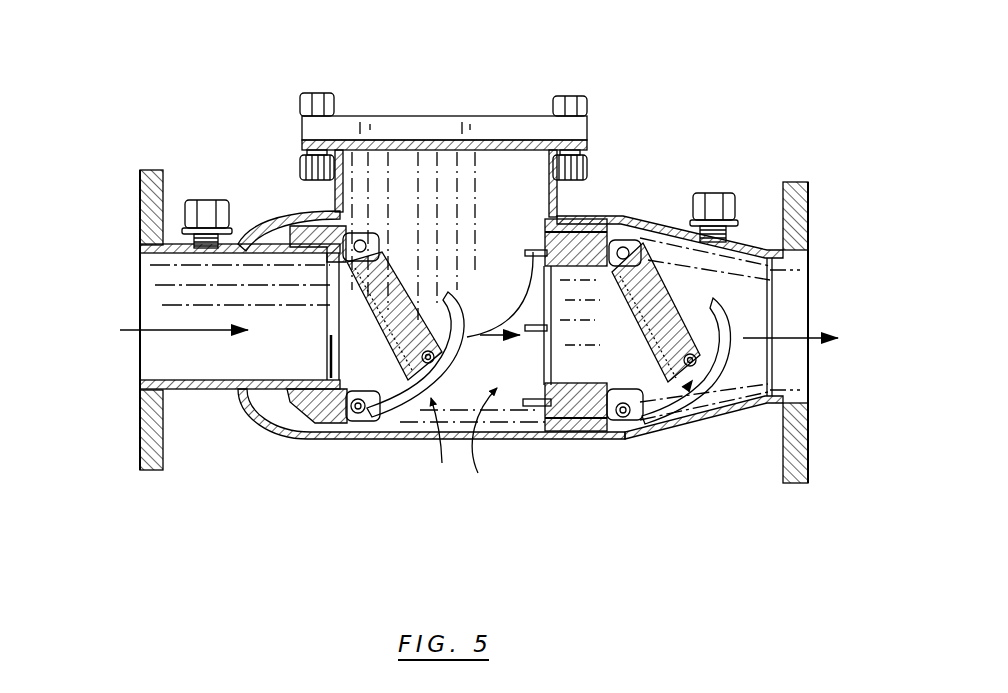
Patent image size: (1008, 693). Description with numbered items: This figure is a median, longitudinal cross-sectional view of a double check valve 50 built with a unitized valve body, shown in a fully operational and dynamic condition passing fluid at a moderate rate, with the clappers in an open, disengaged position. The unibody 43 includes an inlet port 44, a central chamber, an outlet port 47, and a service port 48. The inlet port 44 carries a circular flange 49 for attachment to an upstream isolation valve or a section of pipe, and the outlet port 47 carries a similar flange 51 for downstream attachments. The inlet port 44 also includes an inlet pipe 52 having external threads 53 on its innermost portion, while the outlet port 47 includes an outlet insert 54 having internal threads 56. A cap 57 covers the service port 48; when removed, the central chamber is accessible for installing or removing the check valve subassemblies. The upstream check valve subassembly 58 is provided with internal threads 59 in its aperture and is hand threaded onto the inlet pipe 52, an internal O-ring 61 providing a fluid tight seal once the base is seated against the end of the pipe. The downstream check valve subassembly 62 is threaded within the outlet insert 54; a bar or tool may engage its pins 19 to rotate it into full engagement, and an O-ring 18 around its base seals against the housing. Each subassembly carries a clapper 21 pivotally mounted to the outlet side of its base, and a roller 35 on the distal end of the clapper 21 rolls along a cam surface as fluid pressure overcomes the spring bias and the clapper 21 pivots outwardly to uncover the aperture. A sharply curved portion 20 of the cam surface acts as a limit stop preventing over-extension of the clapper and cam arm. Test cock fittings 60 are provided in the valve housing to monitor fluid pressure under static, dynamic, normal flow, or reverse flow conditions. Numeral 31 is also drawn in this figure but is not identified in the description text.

The O-ring 18 is at (548, 439).
The pins 19 is at (528, 250).
The sharply curved portion of the cam surface 20 is at (440, 306).
The clapper 21 is at (665, 289).
The first valve disc 31 is at (467, 348).
The roller 35 is at (701, 351).
The unibody 43 is at (689, 436).
The inlet port 44 is at (108, 348).
The outlet port 47 is at (818, 365).
The service port 48 is at (387, 102).
The circular flange 49 is at (152, 170).
The double check valve 50 is at (315, 506).
The flange 51 is at (809, 227).
The inlet pipe 52 is at (219, 392).
The external threads 53 is at (240, 244).
The outlet insert 54 is at (570, 222).
The internal threads 56 is at (601, 441).
The cap 57 is at (512, 145).
The upstream check valve subassembly 58 is at (421, 442).
The internal threads 59 is at (283, 397).
The test cock fittings 60 is at (708, 194).
The internal O-ring 61 is at (305, 433).
The downstream check valve subassembly 62 is at (490, 445).